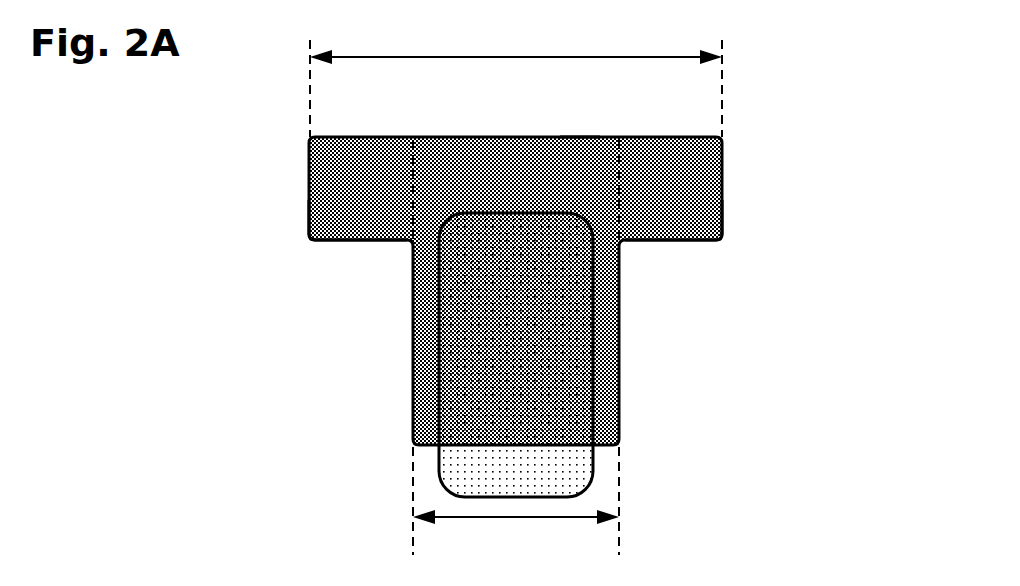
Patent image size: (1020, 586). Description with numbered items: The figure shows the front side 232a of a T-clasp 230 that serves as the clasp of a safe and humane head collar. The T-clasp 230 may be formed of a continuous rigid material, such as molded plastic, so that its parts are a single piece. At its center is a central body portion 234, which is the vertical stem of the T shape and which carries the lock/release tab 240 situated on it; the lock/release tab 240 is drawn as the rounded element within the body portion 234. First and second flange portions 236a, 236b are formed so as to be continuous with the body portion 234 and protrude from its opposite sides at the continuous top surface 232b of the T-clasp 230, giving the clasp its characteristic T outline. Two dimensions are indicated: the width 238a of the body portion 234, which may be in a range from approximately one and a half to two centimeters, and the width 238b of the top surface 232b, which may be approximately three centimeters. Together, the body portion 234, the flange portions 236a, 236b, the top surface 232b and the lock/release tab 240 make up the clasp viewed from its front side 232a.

The T-clasp 230 is at (852, 139).
The front side 232a is at (500, 172).
The continuous top surface 232b is at (455, 122).
The central body portion 234 is at (565, 150).
The first flange portion 236a is at (337, 230).
The second flange portion 236b is at (690, 230).
The width of body portion 238a is at (511, 520).
The width of top surface 238b is at (506, 57).
The lock/release tab 240 is at (467, 338).